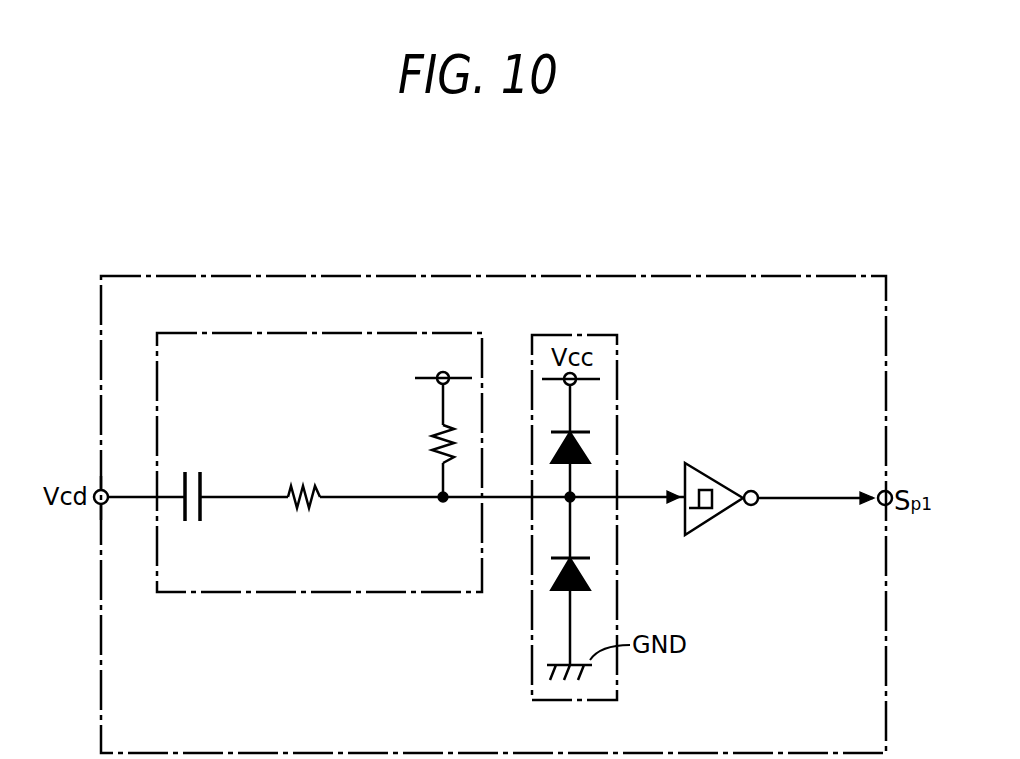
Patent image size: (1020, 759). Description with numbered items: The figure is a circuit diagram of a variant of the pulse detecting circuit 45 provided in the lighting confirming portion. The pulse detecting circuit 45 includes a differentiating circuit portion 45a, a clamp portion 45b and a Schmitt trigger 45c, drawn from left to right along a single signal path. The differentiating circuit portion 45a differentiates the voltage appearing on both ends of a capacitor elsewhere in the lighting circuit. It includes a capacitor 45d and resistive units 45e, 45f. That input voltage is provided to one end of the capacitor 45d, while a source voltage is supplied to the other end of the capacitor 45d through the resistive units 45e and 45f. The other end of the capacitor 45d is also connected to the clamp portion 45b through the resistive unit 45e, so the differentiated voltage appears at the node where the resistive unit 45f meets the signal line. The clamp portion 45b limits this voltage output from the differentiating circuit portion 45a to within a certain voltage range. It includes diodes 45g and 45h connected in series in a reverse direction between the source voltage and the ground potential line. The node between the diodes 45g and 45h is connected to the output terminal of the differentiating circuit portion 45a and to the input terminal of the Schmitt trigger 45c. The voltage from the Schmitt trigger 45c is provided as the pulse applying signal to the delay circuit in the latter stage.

The pulse detecting circuit 45 is at (766, 276).
The differentiating circuit portion 45a is at (340, 333).
The clamp portion 45b is at (580, 335).
The Schmitt trigger 45c is at (710, 478).
The capacitor 45d is at (203, 484).
The resistive unit 45e is at (318, 485).
The resistive unit 45f is at (440, 429).
The diode 45g is at (585, 456).
The diode 45h is at (585, 582).